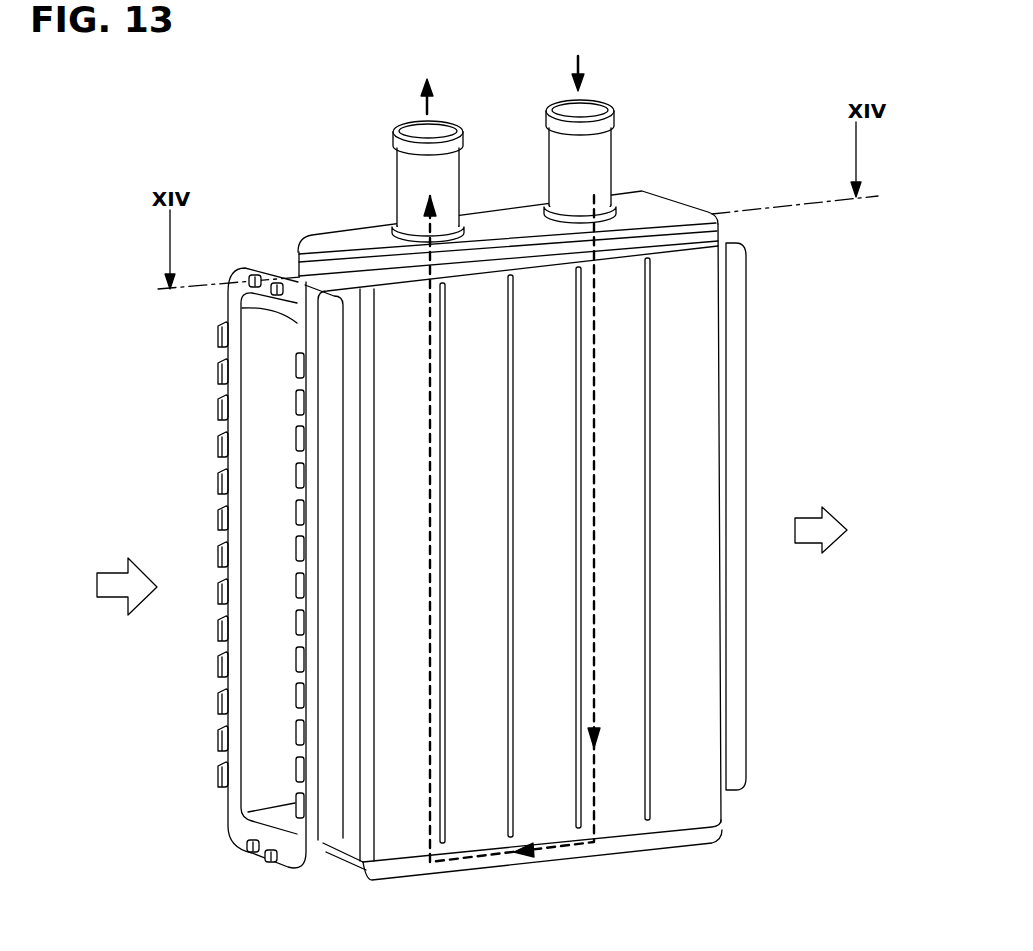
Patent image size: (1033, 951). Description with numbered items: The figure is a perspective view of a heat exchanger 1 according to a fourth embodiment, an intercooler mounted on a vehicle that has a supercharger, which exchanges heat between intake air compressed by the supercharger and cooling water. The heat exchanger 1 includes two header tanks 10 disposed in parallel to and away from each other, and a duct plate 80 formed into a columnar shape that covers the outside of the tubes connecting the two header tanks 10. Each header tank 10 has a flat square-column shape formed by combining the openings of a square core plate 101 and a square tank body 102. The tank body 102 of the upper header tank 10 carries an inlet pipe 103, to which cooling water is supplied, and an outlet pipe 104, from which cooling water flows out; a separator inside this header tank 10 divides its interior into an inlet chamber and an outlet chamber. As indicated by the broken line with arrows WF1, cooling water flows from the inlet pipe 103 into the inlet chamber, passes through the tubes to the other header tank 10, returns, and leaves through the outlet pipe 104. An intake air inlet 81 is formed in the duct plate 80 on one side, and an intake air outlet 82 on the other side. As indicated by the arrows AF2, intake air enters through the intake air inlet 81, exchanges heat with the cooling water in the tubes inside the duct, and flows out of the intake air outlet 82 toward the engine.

The heat exchanger 1 is at (748, 47).
The header tank 10 is at (562, 523).
The duct plate 80 is at (468, 834).
The intake air inlet 81 is at (267, 422).
The intake air outlet 82 is at (732, 386).
The core plate 101 is at (670, 236).
The tank body 102 is at (645, 204).
The inlet pipe 103 is at (612, 159).
The outlet pipe 104 is at (396, 175).
The cooling water flow WF1 is at (600, 483).
The intake air flow AF2 is at (108, 600).